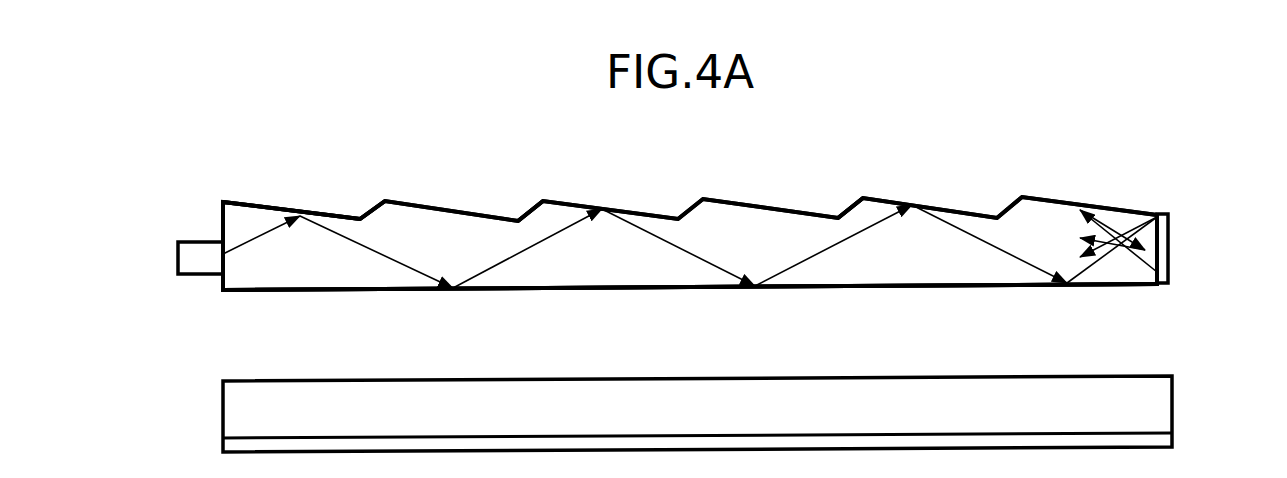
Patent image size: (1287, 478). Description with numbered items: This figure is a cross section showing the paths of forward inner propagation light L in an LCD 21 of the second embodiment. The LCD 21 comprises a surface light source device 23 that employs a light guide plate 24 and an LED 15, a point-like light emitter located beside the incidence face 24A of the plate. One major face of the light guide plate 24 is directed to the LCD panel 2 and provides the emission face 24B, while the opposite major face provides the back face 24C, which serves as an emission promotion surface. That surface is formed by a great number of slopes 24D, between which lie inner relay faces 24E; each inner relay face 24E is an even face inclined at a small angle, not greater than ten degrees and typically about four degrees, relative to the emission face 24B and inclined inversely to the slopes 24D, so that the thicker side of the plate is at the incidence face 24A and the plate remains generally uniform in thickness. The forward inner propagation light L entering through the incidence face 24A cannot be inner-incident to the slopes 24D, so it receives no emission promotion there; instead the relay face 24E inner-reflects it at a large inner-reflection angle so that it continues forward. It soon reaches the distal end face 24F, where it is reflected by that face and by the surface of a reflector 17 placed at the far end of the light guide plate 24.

The LCD panel 2 is at (1172, 405).
The LED 15 is at (178, 255).
The reflector 17 is at (1168, 225).
The LCD 21 is at (1123, 185).
The surface light source device 23 is at (1132, 298).
The light guide plate 24 is at (765, 222).
The incidence face 24A is at (226, 216).
The emission face 24B is at (240, 291).
The back face 24C is at (908, 188).
The slopes 24D is at (530, 212).
The inner relay face 24E is at (343, 217).
The distal end face 24F is at (1157, 273).
The forward inner propagation light L is at (262, 237).